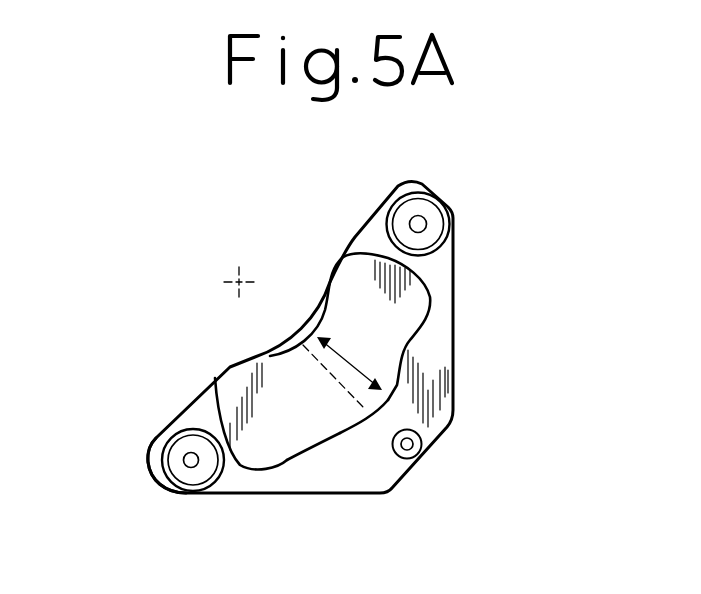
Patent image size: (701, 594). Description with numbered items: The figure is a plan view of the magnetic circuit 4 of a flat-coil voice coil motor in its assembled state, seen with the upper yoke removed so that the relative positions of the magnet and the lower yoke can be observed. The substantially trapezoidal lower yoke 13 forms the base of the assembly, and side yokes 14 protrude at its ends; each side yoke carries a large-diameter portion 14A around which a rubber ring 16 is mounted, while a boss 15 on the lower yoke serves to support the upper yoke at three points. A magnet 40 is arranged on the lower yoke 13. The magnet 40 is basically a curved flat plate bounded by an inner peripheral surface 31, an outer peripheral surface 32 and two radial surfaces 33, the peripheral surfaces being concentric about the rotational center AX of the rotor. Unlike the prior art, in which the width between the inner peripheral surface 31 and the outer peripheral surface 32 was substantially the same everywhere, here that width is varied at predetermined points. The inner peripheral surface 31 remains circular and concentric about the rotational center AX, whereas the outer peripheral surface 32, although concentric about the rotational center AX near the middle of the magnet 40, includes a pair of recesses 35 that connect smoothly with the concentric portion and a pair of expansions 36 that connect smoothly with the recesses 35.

The magnetic circuit 4 is at (320, 354).
The lower yoke 13 is at (437, 325).
The side yokes 14 is at (183, 460).
The large-diameter portions 14A is at (162, 432).
The boss 15 is at (419, 447).
The rubber ring 16 is at (182, 427).
The inner peripheral surface 31 is at (272, 352).
The outer peripheral surface 32 is at (357, 424).
The radial surfaces 33 is at (370, 258).
The recesses 35 is at (318, 442).
The expansions 36 is at (277, 471).
The magnet 40 is at (430, 357).
The rotational center AX is at (238, 280).